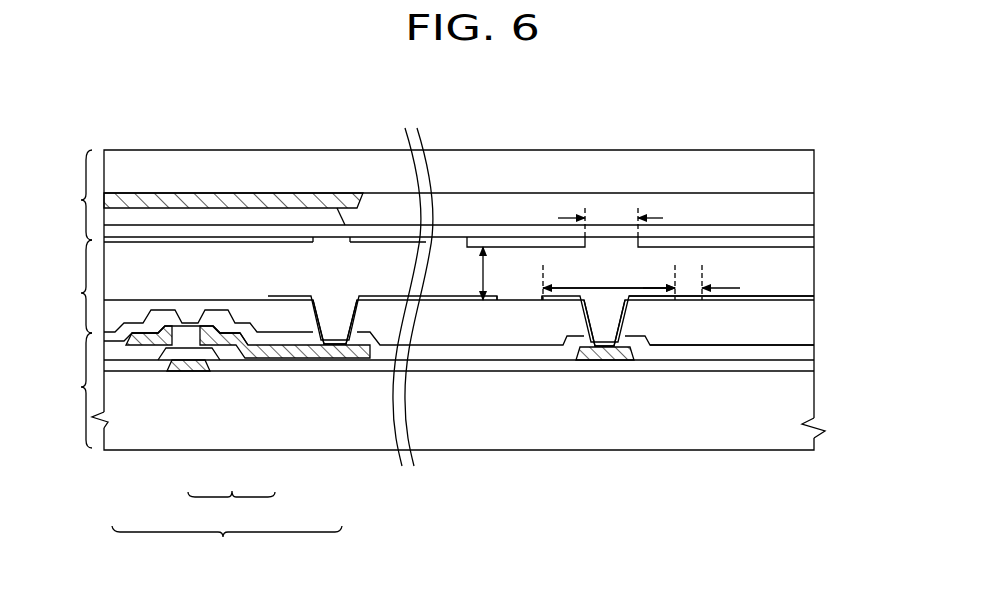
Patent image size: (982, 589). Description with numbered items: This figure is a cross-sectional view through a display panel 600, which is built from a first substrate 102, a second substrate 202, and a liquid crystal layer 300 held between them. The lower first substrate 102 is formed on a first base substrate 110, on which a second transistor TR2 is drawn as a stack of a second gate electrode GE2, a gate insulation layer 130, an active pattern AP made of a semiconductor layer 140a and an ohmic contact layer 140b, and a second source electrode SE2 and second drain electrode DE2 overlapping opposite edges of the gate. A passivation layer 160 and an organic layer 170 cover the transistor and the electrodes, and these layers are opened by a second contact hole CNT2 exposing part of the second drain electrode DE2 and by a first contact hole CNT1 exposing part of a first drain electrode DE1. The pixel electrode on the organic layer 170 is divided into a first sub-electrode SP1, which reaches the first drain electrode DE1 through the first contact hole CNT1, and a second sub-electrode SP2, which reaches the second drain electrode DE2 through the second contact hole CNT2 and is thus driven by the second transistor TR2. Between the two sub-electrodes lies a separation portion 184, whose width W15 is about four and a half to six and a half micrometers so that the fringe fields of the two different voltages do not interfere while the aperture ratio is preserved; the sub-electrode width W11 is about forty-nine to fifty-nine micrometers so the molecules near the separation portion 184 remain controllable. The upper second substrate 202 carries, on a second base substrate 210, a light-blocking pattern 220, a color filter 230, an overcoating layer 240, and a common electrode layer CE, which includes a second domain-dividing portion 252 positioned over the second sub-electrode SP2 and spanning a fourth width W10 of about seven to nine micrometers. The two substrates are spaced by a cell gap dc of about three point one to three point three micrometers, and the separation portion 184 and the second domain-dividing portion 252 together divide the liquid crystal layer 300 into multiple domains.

The display panel 600 is at (443, 84).
The second base substrate 210 is at (180, 162).
The light-blocking pattern 220 is at (233, 200).
The color filter 230 is at (373, 212).
The overcoating layer 240 is at (461, 236).
The common electrode layer CE is at (525, 240).
The second domain-dividing portion 252 is at (673, 258).
The second substrate 202 is at (68, 195).
The liquid crystal layer 300 is at (68, 286).
The first substrate 102 is at (68, 390).
The passivation layer 160 is at (780, 355).
The gate insulation layer 130 is at (780, 370).
The first base substrate 110 is at (780, 395).
The semiconductor layer 140a is at (220, 325).
The ohmic contact layer 140b is at (241, 346).
The second source electrode SE2 is at (150, 347).
The second gate electrode GE2 is at (178, 370).
The active pattern AP is at (193, 425).
The second drain electrode DE2 is at (262, 357).
The second contact hole CNT2 is at (339, 313).
The second transistor TR2 is at (247, 432).
The second sub-electrode SP2 is at (500, 302).
The first sub-electrode SP1 is at (562, 302).
The first contact hole CNT1 is at (608, 308).
The first drain electrode DE1 is at (603, 352).
The separation portion 184 is at (693, 302).
The organic layer 170 is at (746, 332).
The fourth width W10 is at (610, 217).
The width of the first sub-electrode W11 is at (609, 281).
The width of the separation portion W15 is at (694, 280).
The cell gap dc is at (497, 273).